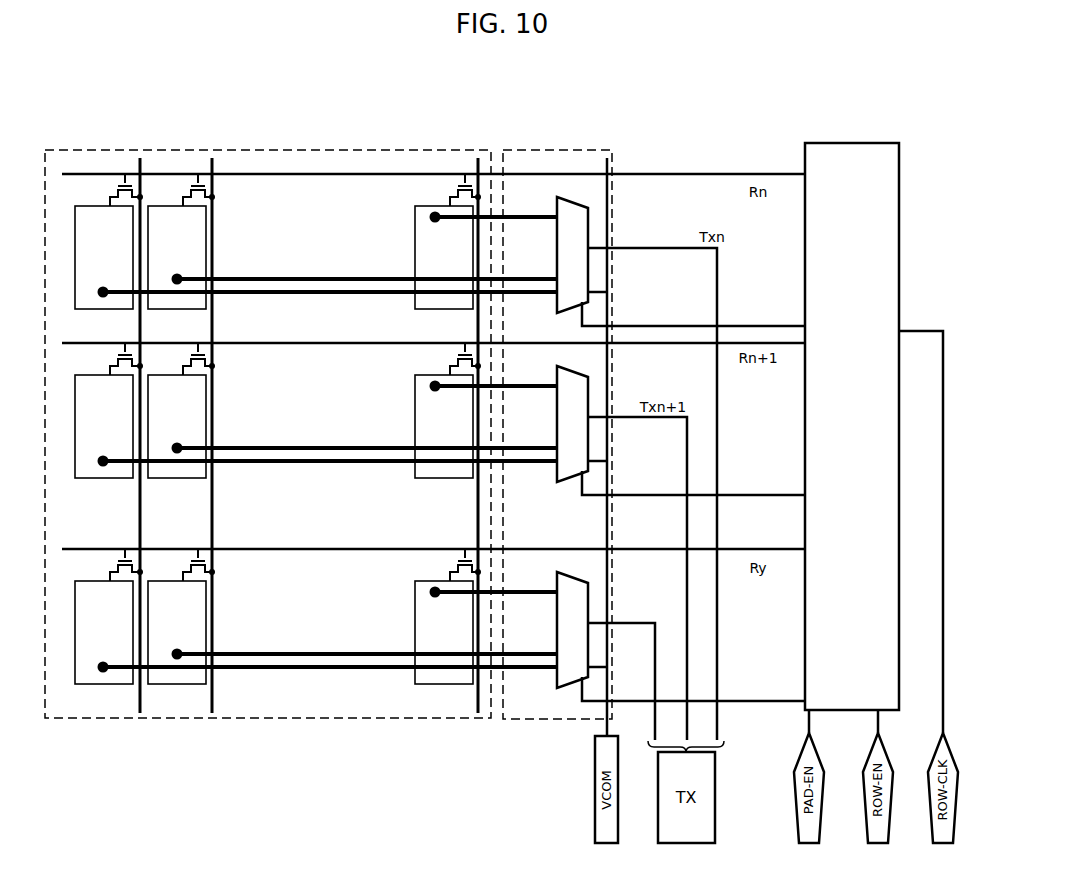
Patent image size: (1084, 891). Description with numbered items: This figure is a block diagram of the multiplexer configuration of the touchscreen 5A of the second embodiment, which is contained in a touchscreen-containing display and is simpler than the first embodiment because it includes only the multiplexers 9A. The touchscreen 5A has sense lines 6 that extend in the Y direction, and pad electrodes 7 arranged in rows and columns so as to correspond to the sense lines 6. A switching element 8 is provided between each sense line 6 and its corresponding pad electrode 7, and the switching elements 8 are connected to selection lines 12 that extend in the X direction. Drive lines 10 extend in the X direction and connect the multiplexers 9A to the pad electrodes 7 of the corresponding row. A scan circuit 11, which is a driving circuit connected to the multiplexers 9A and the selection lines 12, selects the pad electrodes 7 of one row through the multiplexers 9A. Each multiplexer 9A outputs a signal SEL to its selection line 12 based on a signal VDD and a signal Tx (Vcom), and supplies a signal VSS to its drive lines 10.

The touchscreen 5A is at (912, 113).
The sense line 6 is at (142, 700).
The pad electrode 7 is at (90, 223).
The switching element 8 is at (118, 188).
The multiplexer 9A is at (573, 197).
The drive line 10 is at (304, 292).
The scan circuit 11 is at (852, 143).
The selection line 12 is at (318, 172).